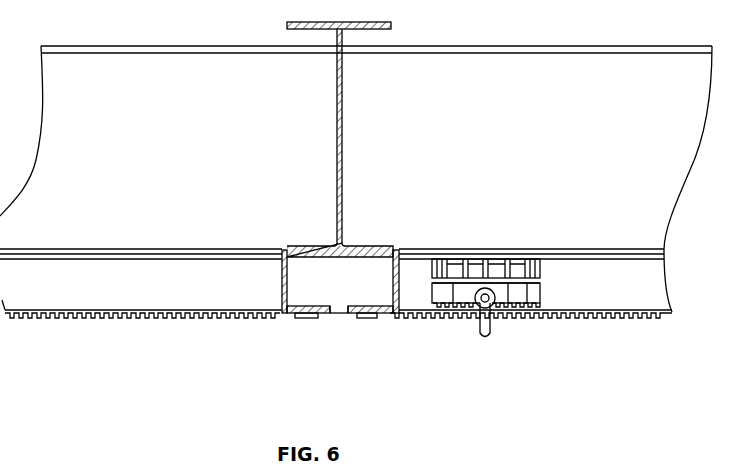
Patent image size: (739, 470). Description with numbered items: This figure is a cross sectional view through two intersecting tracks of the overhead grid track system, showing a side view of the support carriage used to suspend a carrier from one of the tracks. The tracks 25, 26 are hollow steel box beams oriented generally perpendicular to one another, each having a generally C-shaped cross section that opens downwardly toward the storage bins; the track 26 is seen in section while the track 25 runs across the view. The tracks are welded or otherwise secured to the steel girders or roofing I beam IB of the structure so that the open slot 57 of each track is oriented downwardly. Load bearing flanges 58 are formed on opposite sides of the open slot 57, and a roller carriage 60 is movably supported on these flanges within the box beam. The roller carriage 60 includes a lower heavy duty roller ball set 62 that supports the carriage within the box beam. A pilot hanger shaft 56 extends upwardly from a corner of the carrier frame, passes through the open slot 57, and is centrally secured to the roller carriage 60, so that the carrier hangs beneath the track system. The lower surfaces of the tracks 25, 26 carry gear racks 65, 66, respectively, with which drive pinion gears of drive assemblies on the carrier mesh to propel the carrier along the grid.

The track 25 is at (115, 249).
The I beam IB is at (331, 140).
The track 26 is at (282, 290).
The load bearing flange 58 is at (364, 306).
The open slot 57 is at (340, 313).
The gear rack 66 is at (306, 318).
The roller carriage 60 is at (497, 254).
The lower heavy duty roller ball set 62 is at (463, 296).
The pilot hanger shaft 56 is at (494, 326).
The gear rack 65 is at (625, 321).